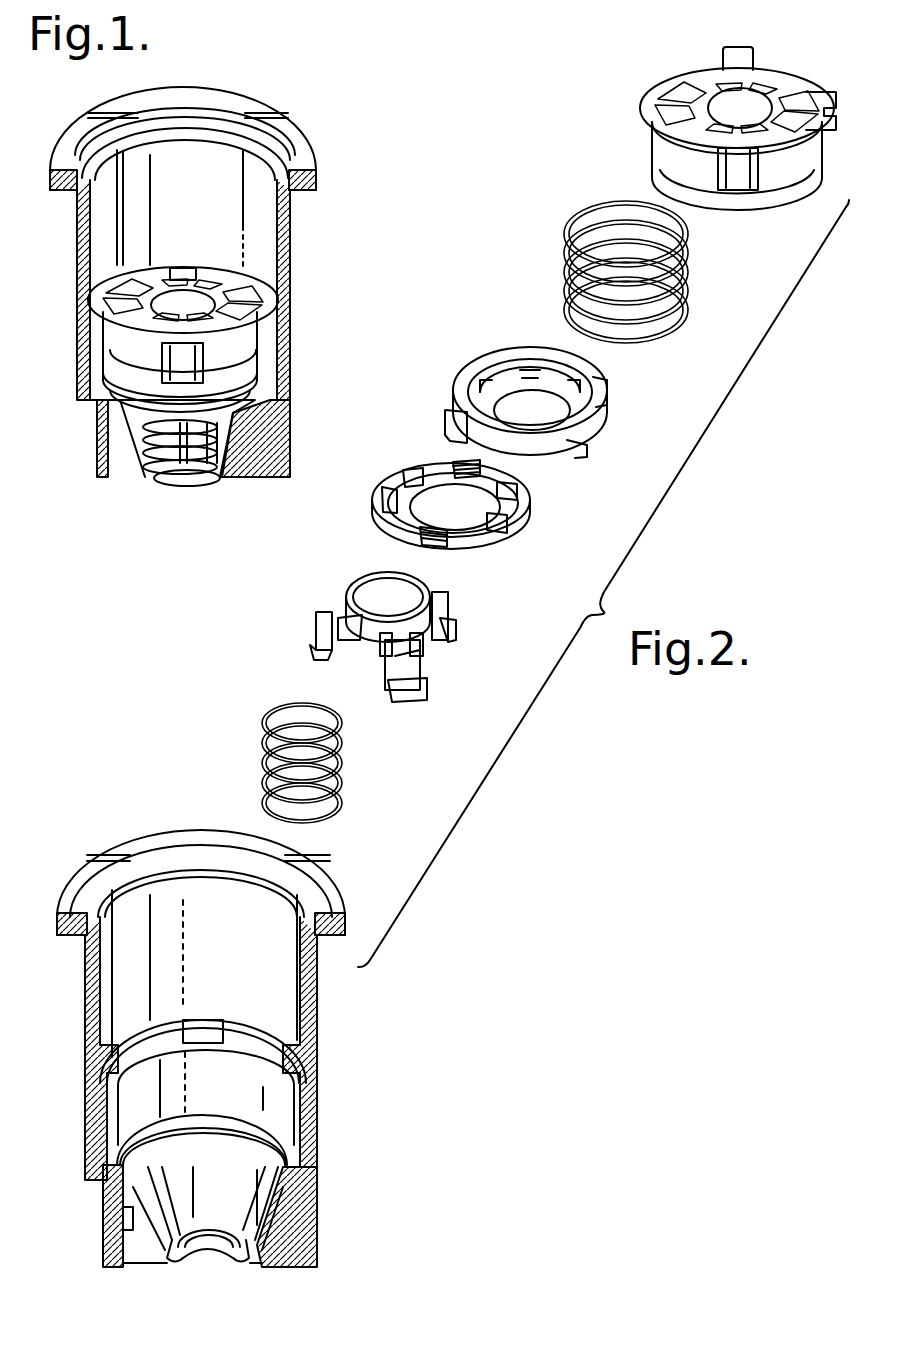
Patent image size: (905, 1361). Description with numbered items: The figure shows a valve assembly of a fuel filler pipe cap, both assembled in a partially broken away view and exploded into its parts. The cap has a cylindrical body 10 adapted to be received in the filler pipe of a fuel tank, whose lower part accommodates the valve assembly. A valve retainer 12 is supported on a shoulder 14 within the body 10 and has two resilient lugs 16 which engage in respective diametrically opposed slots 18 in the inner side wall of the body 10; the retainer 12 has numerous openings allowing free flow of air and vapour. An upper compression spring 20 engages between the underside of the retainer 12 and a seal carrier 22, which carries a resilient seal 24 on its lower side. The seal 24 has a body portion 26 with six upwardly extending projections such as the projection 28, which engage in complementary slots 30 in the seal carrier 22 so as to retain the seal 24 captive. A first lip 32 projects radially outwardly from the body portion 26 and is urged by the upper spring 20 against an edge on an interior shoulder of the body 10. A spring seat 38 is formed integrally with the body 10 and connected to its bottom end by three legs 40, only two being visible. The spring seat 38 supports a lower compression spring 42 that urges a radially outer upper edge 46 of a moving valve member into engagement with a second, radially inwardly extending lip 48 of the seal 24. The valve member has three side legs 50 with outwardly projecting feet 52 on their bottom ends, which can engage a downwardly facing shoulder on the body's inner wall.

In FIG. 1, the cylindrical body 10 is at (285, 227).
In FIG. 1, the valve retainer 12 is at (262, 300).
In FIG. 2, the valve retainer 12 is at (648, 112).
In FIG. 2, the shoulder 14 is at (300, 1066).
In FIG. 2, the resilient lugs 16 is at (723, 55).
In FIG. 1, the slots 18 is at (172, 268).
In FIG. 2, the slots 18 is at (210, 1020).
In FIG. 2, the upper compression spring 20 is at (580, 220).
In FIG. 2, the seal carrier 22 is at (592, 368).
In FIG. 2, the resilient seal 24 is at (538, 493).
In FIG. 2, the body portion 26 is at (422, 468).
In FIG. 2, the projection 28 is at (385, 486).
In FIG. 2, the slots 30 is at (472, 380).
In FIG. 2, the first lip 32 is at (521, 522).
In FIG. 2, the spring seat 38 is at (205, 1238).
In FIG. 1, the legs 40 is at (243, 457).
In FIG. 2, the legs 40 is at (170, 1200).
In FIG. 2, the lower compression spring 42 is at (262, 758).
In FIG. 2, the radially outer upper edge 46 is at (362, 627).
In FIG. 2, the second lip 48 is at (470, 497).
In FIG. 2, the side legs 50 is at (447, 608).
In FIG. 2, the feet 52 is at (450, 628).